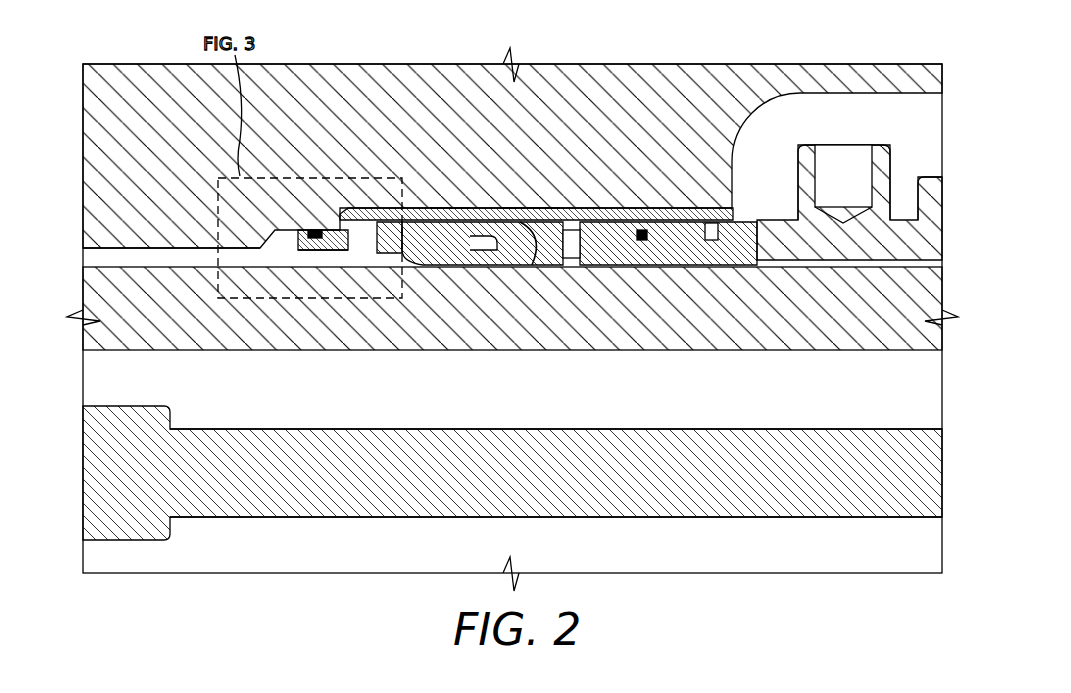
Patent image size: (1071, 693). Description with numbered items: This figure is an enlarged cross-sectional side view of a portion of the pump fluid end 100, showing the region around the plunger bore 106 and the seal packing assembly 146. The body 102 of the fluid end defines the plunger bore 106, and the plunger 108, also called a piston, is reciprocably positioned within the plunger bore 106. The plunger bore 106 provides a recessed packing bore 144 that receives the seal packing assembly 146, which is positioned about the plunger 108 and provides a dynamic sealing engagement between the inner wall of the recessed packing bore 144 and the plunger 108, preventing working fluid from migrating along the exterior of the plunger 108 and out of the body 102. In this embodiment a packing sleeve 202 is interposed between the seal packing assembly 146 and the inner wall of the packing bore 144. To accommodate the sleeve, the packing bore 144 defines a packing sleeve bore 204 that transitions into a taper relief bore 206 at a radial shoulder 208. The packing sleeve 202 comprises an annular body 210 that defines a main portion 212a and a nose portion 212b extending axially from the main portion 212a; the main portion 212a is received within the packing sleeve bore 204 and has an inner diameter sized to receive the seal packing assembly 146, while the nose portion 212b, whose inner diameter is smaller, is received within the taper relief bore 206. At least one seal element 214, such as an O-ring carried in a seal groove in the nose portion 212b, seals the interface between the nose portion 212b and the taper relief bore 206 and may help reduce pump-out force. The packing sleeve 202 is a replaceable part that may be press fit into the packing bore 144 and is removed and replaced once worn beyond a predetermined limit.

The fluid end 100 is at (128, 32).
The body 102 is at (297, 103).
The plunger bore 106 is at (150, 245).
The plunger 108 is at (468, 303).
The recessed packing bore 144 is at (452, 205).
The seal packing assembly 146 is at (542, 268).
The packing sleeve 202 is at (417, 206).
The packing sleeve bore 204 is at (617, 210).
The taper relief bore 206 is at (283, 226).
The radial shoulder 208 is at (346, 206).
The annular body 210 is at (505, 206).
The main portion 212a is at (686, 206).
The nose portion 212b is at (352, 252).
The seal element 214 is at (312, 228).